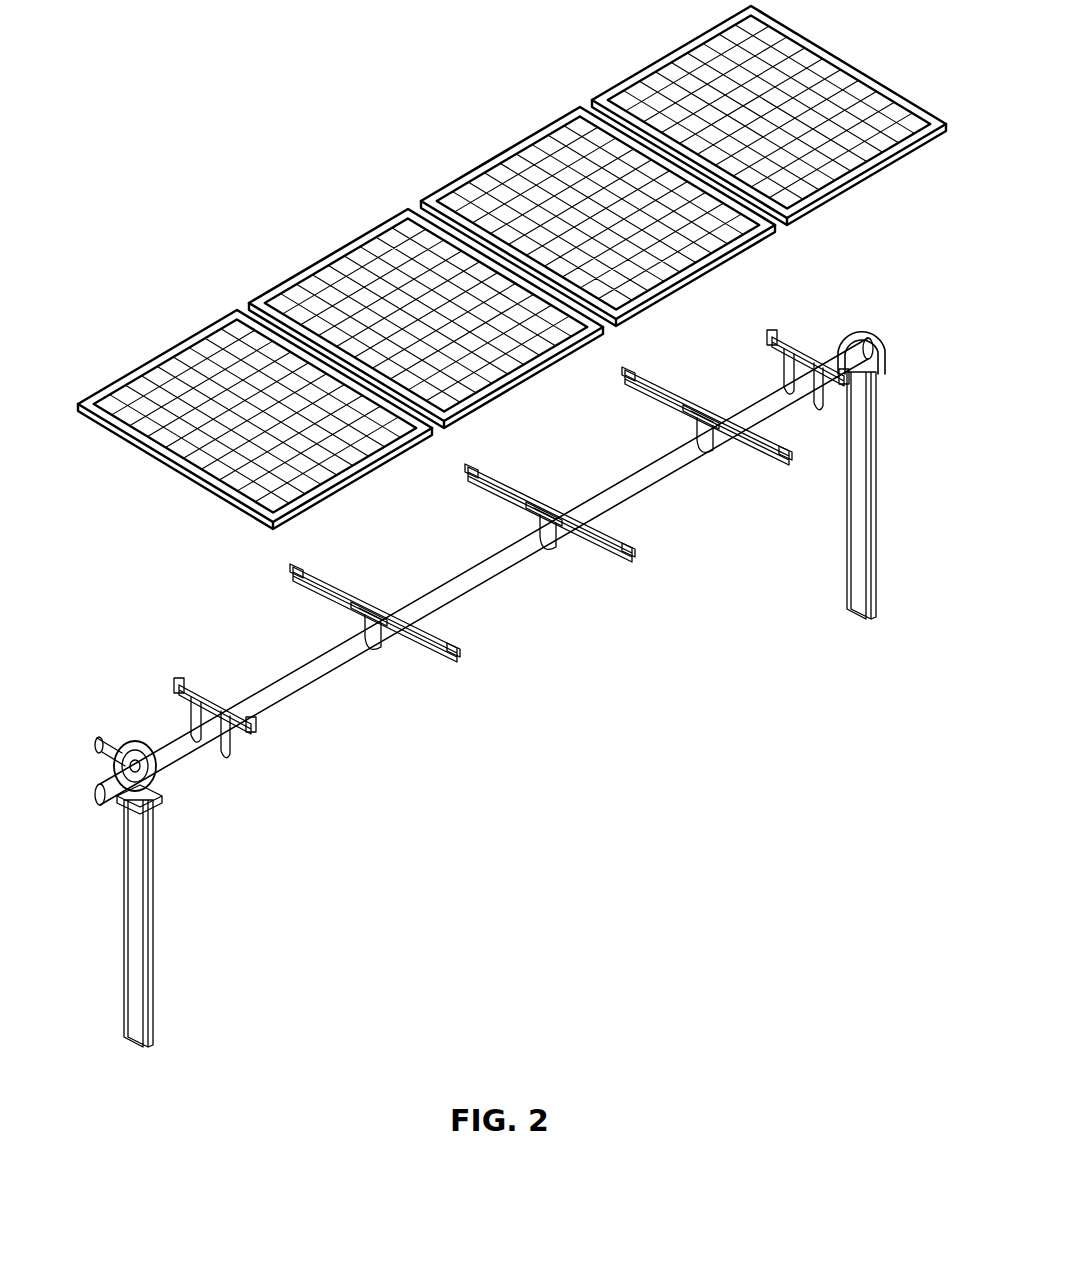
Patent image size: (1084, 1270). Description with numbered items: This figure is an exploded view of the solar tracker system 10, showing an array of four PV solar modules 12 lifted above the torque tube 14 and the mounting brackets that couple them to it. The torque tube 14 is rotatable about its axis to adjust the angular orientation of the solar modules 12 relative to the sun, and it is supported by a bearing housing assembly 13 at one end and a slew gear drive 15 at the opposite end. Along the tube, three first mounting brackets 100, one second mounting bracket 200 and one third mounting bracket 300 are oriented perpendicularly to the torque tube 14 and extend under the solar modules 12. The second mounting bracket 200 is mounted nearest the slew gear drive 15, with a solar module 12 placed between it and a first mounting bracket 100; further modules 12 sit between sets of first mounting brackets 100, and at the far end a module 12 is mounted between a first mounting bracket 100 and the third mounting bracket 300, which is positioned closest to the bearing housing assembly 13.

The solar tracker system 10 is at (137, 87).
The solar module 12 is at (148, 391).
The bearing housing assembly 13 is at (872, 323).
The torque tube 14 is at (192, 744).
The slew gear drive 15 is at (113, 768).
The first mounting bracket 100 is at (769, 483).
The second mounting bracket 200 is at (243, 754).
The third mounting bracket 300 is at (852, 386).